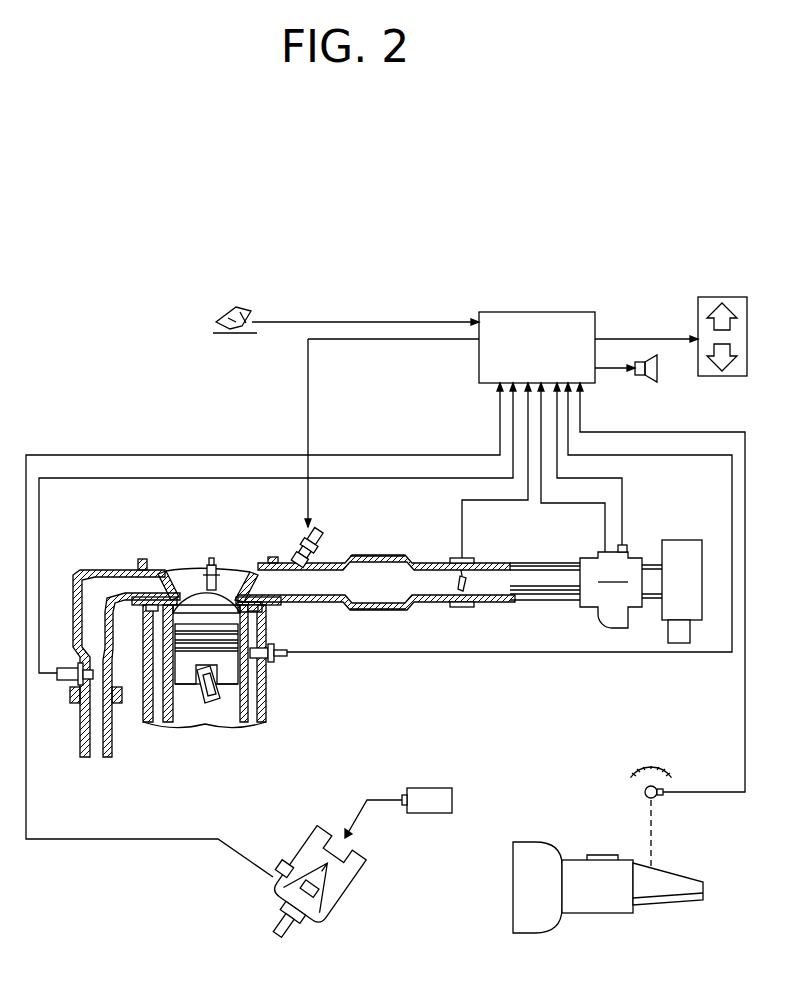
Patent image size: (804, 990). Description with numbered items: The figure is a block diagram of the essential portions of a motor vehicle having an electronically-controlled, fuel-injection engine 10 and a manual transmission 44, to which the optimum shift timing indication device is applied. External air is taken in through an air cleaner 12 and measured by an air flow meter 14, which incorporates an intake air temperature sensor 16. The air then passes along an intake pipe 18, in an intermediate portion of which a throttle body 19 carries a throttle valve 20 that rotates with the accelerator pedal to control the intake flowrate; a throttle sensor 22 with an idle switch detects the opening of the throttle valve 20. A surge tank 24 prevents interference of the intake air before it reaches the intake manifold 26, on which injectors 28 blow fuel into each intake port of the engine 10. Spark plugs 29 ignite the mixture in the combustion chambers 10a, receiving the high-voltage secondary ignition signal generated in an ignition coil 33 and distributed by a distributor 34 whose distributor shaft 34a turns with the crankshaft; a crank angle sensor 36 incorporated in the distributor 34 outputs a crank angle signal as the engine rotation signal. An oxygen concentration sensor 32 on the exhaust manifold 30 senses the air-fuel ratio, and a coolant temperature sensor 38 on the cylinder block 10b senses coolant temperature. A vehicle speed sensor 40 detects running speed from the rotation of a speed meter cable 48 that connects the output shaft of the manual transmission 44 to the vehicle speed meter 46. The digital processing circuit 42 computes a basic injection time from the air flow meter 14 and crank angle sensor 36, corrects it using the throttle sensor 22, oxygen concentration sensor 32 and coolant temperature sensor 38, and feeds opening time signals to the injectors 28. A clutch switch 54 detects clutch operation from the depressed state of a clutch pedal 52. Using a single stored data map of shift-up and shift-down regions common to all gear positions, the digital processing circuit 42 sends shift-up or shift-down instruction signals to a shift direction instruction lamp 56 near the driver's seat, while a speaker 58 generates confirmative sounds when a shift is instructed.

The engine 10 is at (237, 615).
The combustion chambers 10a is at (228, 624).
The cylinder block 10b is at (266, 705).
The air cleaner 12 is at (680, 540).
The air flow meter 14 is at (598, 614).
The intake air temperature sensor 16 is at (626, 545).
The intake pipe 18 is at (510, 600).
The throttle body 19 is at (466, 608).
The throttle valve 20 is at (458, 580).
The throttle sensor 22 is at (468, 557).
The surge tank 24 is at (409, 608).
The intake manifold 26 is at (320, 602).
The injectors 28 is at (320, 530).
The spark plugs 29 is at (220, 572).
The exhaust manifold 30 is at (95, 568).
The oxygen concentration sensor 32 is at (63, 683).
The ignition coil 33 is at (430, 788).
The distributor 34 is at (317, 894).
The distributor shaft 34a is at (287, 921).
The crank angle sensor 36 is at (284, 869).
The coolant temperature sensor 38 is at (285, 660).
The vehicle speed sensor 40 is at (659, 797).
The digital processing circuit 42 is at (538, 311).
The manual transmission 44 is at (603, 913).
The vehicle speed meter 46 is at (632, 781).
The speed meter cable 48 is at (651, 822).
The clutch pedal 52 is at (246, 312).
The clutch switch 54 is at (252, 330).
The shift direction instruction lamp 56 is at (722, 297).
The speaker 58 is at (643, 382).